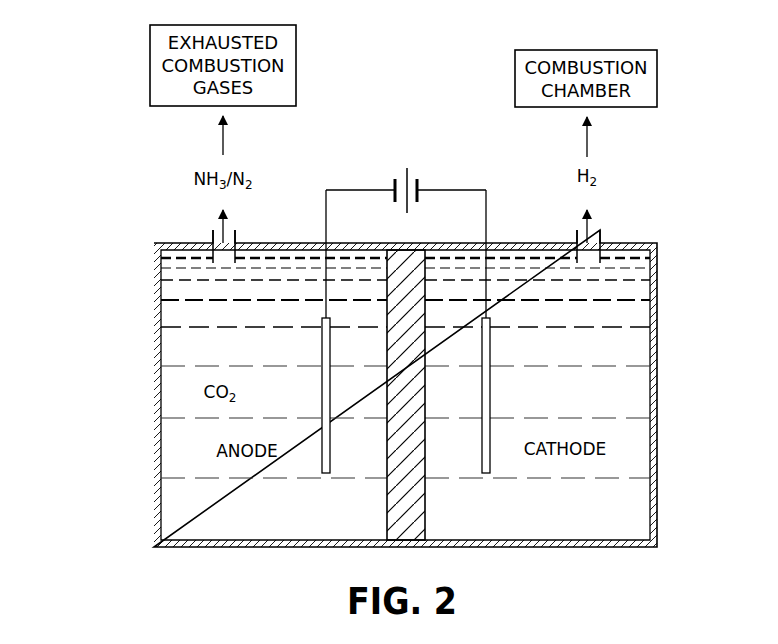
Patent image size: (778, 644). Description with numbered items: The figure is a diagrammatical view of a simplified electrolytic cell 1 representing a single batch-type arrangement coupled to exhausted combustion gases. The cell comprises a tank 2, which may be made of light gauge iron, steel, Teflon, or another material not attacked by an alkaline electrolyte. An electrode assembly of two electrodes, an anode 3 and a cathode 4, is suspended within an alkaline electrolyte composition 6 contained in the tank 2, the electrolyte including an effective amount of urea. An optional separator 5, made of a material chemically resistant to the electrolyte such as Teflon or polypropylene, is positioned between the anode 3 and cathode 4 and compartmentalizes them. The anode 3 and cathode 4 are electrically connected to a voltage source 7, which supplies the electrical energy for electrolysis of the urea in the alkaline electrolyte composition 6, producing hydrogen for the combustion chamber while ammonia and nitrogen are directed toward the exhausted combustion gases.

The electrolytic cell 1 is at (76, 97).
The tank 2 is at (658, 383).
The anode 3 is at (322, 393).
The cathode 4 is at (490, 393).
The separator 5 is at (420, 512).
The alkaline electrolyte composition 6 is at (286, 508).
The voltage source 7 is at (427, 165).